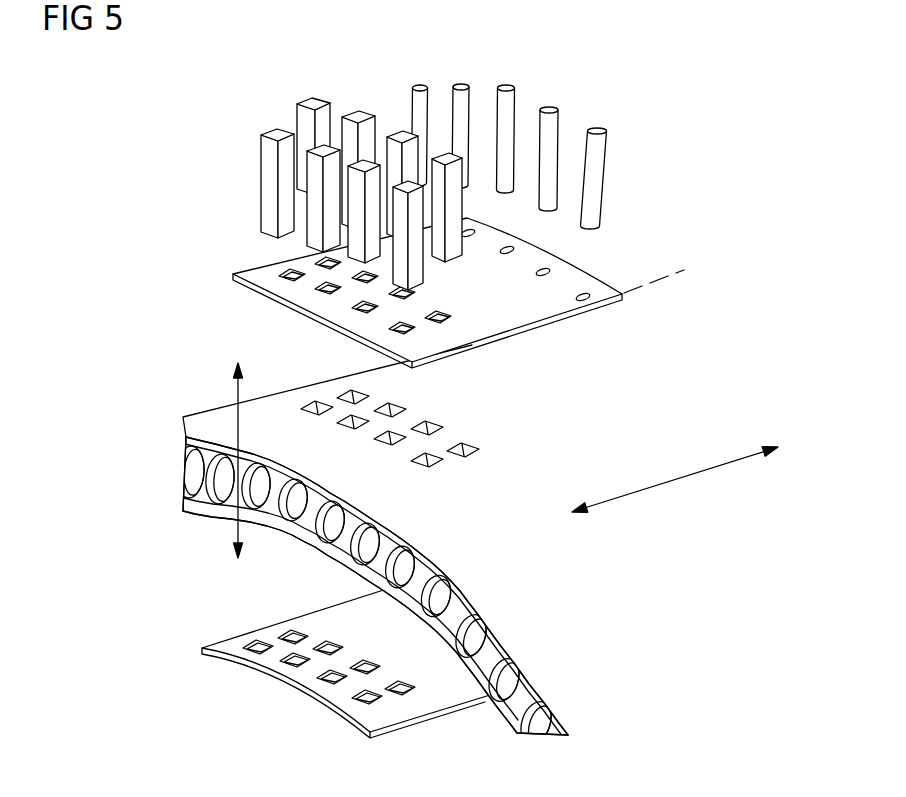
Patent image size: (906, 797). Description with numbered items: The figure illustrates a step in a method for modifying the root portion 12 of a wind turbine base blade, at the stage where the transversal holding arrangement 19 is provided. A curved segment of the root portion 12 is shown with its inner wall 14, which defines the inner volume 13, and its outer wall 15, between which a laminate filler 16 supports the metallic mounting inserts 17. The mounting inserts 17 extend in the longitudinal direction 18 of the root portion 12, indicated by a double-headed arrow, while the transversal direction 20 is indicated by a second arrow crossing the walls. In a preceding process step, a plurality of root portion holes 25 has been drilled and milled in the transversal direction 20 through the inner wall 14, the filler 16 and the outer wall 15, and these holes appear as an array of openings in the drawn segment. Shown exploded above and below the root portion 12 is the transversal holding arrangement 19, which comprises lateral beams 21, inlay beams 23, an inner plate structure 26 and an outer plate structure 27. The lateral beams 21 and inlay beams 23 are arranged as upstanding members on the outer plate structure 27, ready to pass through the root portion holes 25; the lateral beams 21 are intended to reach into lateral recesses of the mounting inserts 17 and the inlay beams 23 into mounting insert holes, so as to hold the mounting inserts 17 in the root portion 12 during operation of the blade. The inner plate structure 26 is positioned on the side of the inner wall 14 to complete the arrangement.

The root portion 12 is at (104, 551).
The inner volume 13 is at (213, 730).
The inner wall 14 is at (190, 510).
The outer wall 15 is at (186, 428).
The laminate filler 16 is at (496, 650).
The mounting inserts 17 is at (438, 598).
The longitudinal direction 18 is at (676, 480).
The transversal holding arrangement 19 is at (212, 95).
The transversal direction 20 is at (234, 395).
The lateral beams 21 is at (270, 152).
The inlay beams 23 is at (510, 98).
The root portion holes 25 is at (470, 451).
The inner plate structure 26 is at (203, 648).
The outer plate structure 27 is at (236, 276).